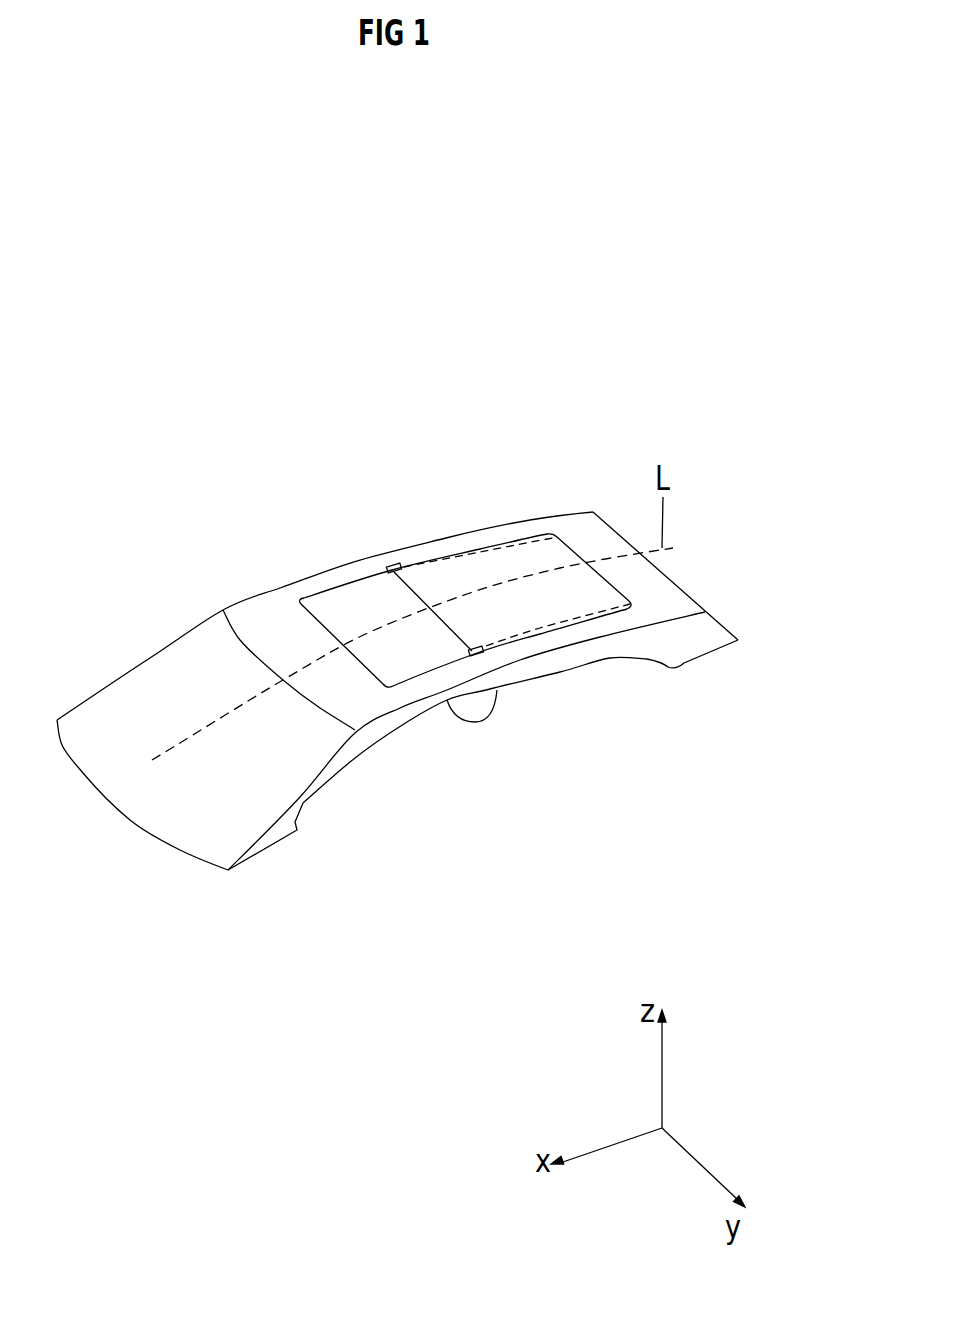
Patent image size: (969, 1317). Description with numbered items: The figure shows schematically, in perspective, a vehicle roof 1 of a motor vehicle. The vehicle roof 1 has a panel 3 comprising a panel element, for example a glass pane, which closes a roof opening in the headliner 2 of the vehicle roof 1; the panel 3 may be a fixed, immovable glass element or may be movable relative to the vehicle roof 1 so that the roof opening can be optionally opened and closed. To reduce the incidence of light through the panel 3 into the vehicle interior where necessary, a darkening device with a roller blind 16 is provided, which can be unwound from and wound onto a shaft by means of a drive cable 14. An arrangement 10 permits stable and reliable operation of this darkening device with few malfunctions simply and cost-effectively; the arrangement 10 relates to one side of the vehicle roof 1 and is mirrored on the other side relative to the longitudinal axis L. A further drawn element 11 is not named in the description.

The vehicle roof 1 is at (397, 621).
The headliner 2 is at (582, 540).
The panel 3 is at (407, 665).
The arrangement 10 is at (393, 552).
The sensor line 11 is at (402, 597).
The drive cable 14 is at (500, 543).
The roller blind 16 is at (592, 587).